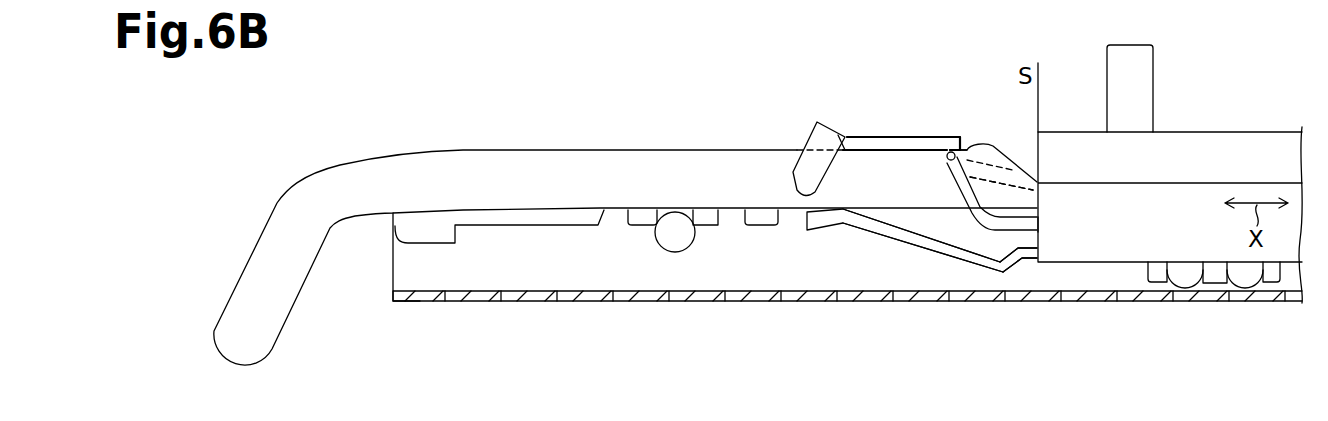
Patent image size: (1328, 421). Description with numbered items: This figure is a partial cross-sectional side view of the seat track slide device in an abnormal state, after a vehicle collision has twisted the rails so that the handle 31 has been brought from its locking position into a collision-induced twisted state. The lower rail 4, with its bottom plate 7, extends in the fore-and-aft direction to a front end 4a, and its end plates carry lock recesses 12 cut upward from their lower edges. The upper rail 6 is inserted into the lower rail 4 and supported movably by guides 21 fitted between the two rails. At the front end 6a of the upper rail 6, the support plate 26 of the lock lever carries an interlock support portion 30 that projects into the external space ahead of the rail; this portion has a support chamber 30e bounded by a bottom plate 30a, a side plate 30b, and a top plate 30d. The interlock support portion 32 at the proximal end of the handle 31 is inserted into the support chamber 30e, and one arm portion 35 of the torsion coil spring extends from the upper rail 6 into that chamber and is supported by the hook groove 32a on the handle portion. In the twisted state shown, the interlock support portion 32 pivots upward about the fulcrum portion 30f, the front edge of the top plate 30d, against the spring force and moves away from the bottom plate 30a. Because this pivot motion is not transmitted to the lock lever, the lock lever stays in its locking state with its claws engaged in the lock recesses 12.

The handle 31 is at (468, 137).
The lower rail 4 is at (1282, 309).
The front end 4a is at (396, 303).
The bottom plate 7 is at (1247, 299).
The lock recess 12 is at (742, 221).
The interlock support portion 30 is at (913, 247).
The bottom plate 30a is at (953, 254).
The side plate 30b is at (803, 177).
The top plate 30d is at (880, 134).
The support chamber 30e is at (977, 236).
The fulcrum portion 30f is at (843, 140).
The interlock support portion 32 is at (852, 136).
The hook groove 32a is at (946, 128).
The upper rail 6 is at (1183, 124).
The front end 6a is at (1042, 131).
The support plate 26 is at (1026, 215).
The arm portion 35 is at (1038, 230).
The guide 21 is at (1210, 279).